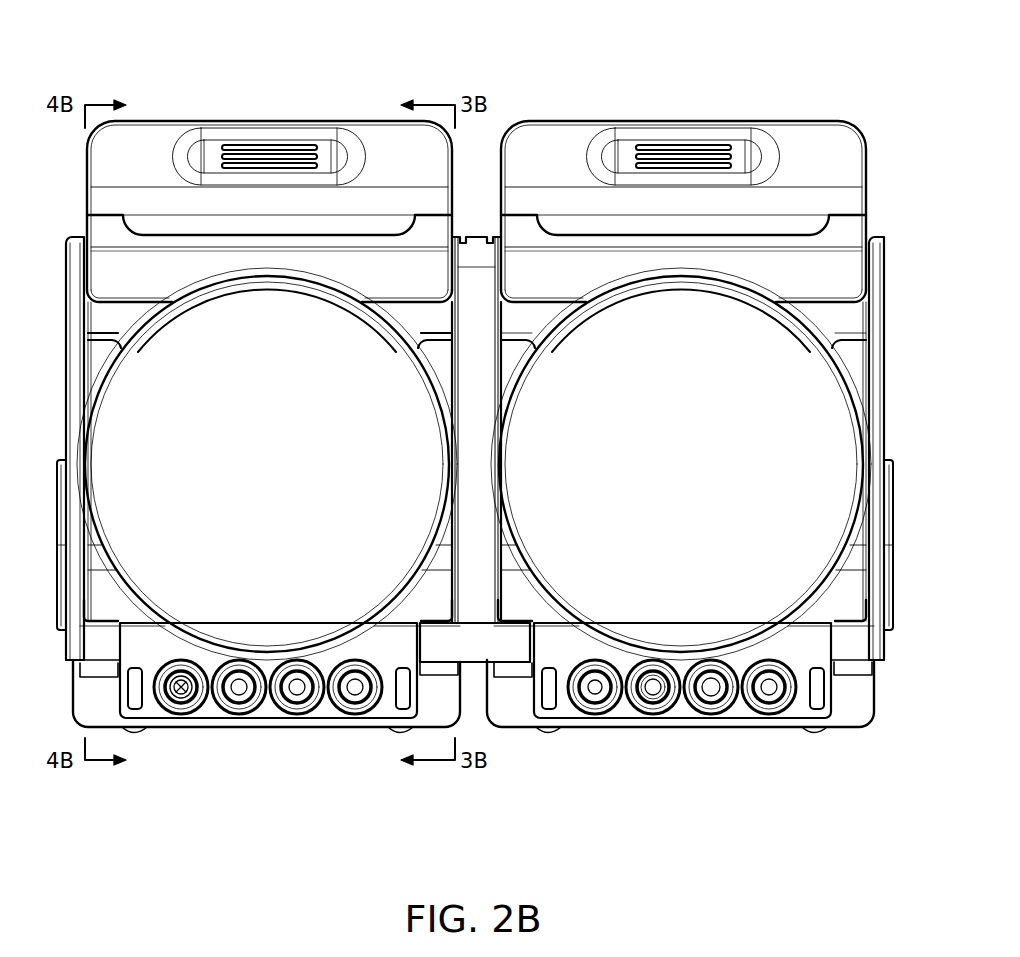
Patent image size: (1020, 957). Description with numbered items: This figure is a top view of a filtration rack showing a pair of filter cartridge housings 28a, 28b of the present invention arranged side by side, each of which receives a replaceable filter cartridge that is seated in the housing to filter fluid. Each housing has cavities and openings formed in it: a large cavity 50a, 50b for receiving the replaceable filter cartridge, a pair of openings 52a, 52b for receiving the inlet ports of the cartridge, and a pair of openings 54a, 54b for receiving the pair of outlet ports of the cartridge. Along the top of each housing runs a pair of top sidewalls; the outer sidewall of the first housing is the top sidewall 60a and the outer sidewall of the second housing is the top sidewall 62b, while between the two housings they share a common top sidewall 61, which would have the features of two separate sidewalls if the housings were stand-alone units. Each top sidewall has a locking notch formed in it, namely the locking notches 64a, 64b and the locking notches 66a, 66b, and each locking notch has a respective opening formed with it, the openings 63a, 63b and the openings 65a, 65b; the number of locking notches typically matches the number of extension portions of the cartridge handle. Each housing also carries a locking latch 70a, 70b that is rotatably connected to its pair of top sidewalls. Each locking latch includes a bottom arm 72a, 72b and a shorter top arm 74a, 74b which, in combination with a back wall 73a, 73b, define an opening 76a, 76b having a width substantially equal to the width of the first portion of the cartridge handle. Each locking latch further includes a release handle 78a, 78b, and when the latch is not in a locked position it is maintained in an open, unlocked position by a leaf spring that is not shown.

The filter cartridge housing 28a is at (700, 66).
The filter cartridge housing 28b is at (286, 66).
The cavity 50a is at (681, 464).
The cavity 50b is at (251, 437).
The openings 52a is at (624, 716).
The openings 52b is at (203, 716).
The openings 54a is at (741, 716).
The openings 54b is at (317, 713).
The top sidewall 60a is at (884, 372).
The common top sidewall 61 is at (482, 643).
The top sidewall 62b is at (66, 375).
The opening 63a is at (825, 546).
The opening 63b is at (445, 558).
The locking notch 64a is at (816, 594).
The locking notch 64b is at (433, 620).
The opening 65a is at (546, 548).
The opening 65b is at (95, 563).
The locking notch 66a is at (552, 596).
The locking notch 66b is at (105, 620).
The locking latch 70a is at (683, 345).
The locking latch 70b is at (350, 122).
The bottom arm 72a is at (716, 262).
The bottom arm 72b is at (113, 287).
The back wall 73a is at (713, 225).
The back wall 73b is at (102, 228).
The top arm 74a is at (711, 195).
The top arm 74b is at (138, 218).
The opening 76a is at (503, 230).
The opening 76b is at (423, 215).
The release handle 78a is at (682, 127).
The release handle 78b is at (170, 122).